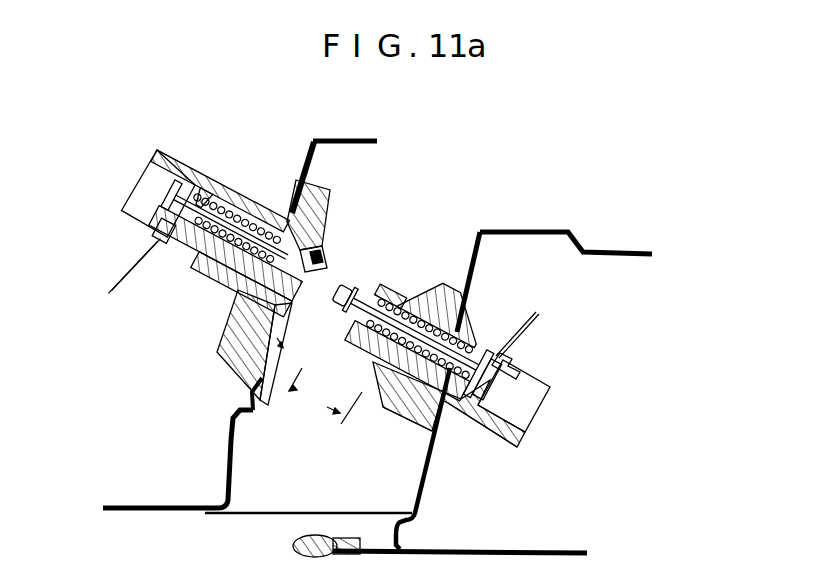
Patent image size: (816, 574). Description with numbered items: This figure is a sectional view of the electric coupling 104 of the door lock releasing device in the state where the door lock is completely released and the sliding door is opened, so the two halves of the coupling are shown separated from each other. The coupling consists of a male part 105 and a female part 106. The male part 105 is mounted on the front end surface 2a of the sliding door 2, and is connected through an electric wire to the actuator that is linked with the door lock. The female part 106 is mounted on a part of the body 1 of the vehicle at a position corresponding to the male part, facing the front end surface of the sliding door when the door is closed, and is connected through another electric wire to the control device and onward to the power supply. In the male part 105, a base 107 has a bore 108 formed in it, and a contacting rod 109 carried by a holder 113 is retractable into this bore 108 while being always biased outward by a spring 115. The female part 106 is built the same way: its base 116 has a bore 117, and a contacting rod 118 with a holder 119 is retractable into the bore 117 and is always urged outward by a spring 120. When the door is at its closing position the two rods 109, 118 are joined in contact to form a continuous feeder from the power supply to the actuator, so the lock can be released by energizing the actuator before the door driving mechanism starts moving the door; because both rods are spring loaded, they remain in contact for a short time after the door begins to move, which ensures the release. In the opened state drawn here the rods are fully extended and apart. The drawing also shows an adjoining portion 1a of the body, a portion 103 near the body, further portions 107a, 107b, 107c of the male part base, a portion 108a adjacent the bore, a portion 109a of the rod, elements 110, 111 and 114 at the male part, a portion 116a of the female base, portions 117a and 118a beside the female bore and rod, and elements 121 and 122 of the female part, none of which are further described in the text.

The body 1 is at (158, 513).
The bent portion of mounting plate 1a is at (243, 380).
The sliding door 2 is at (523, 549).
The front end surface 2a is at (423, 485).
The fastener 103 is at (258, 497).
The electric coupling 104 is at (423, 200).
The male part 105 is at (433, 273).
The female part 106 is at (340, 188).
The base 107 is at (407, 430).
The housing end plate 107a is at (530, 427).
The housing portion 107b is at (447, 410).
The housing portion 107c is at (397, 420).
The bore 108 is at (400, 309).
The cover flange 108a is at (478, 328).
The contacting rod 109 is at (371, 352).
The casing rim 109a is at (362, 293).
The end plate 110 is at (491, 357).
The pin 111 is at (531, 334).
The holder 113 is at (380, 287).
The bolt head 114 is at (357, 332).
The spring 115 is at (463, 310).
The base 116 is at (227, 327).
The plate 116a is at (233, 360).
The bore 117 is at (207, 267).
The housing projection 117a is at (210, 187).
The contacting rod 118 is at (243, 230).
The end plate 118a is at (320, 267).
The holder 119 is at (317, 257).
The spring 120 is at (240, 190).
The block 121 is at (193, 167).
The shaft 122 is at (143, 263).